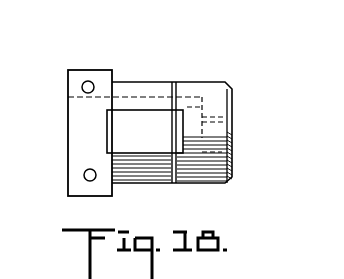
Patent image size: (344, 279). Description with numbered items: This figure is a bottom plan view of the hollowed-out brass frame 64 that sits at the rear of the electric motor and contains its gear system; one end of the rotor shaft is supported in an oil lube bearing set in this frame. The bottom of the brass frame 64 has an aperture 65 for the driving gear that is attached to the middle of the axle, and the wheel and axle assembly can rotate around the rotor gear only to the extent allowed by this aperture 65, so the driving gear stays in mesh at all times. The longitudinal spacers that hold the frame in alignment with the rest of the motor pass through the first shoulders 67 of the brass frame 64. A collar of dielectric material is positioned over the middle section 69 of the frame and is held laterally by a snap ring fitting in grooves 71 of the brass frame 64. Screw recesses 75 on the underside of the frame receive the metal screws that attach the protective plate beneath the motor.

The hollowed-out brass frame 64 is at (217, 97).
The aperture 65 is at (138, 140).
The first shoulders 67 is at (103, 70).
The middle section 69 is at (133, 92).
The grooves 71 is at (175, 87).
The screw recesses 75 is at (85, 87).